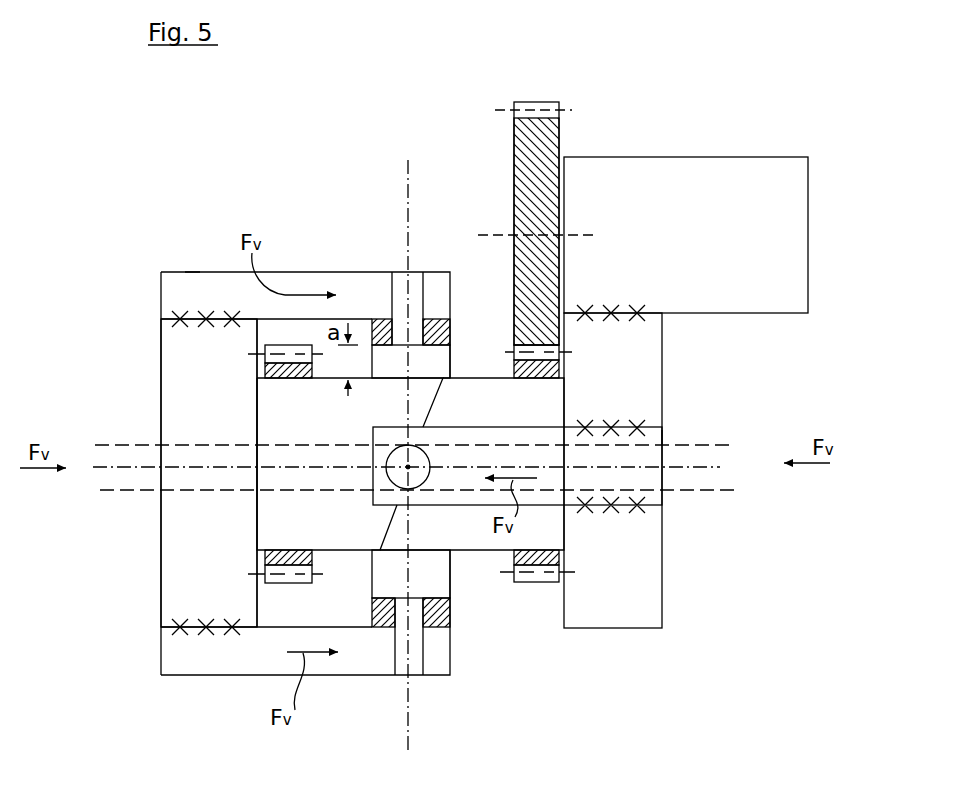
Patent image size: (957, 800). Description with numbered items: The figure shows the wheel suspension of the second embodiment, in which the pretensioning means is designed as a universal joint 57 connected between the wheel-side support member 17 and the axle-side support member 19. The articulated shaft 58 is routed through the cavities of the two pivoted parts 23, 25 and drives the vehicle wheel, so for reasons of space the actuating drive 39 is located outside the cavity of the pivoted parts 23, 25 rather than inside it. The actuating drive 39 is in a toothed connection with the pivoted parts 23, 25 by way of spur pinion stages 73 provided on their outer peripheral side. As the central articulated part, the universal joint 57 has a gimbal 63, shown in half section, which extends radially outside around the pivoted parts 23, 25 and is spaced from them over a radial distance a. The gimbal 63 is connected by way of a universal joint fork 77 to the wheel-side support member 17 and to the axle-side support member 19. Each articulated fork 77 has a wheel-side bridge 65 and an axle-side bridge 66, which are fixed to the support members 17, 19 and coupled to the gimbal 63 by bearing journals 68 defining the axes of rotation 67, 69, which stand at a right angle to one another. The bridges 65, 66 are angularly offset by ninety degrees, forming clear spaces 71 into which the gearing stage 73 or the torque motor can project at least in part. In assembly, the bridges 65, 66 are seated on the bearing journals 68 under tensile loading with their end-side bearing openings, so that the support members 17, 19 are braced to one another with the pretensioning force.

The wheel-side support member 17 is at (230, 406).
The axle-side support member 19 is at (622, 384).
The pivoted part 23 is at (323, 426).
The pivoted part 25 is at (525, 417).
The actuating drive 39 is at (720, 239).
The universal joint 57 is at (362, 249).
The articulated shaft 58 is at (724, 491).
The gimbal 63 is at (450, 580).
The wheel-side bridge 65 is at (161, 297).
The axle-side bridge 66 is at (664, 455).
The axis of rotation 67 is at (408, 242).
The bearing journal 68 is at (390, 293).
The axis of rotation 69 is at (408, 467).
The clear space 71 is at (464, 350).
The spur pinion stage 73 is at (505, 351).
The universal joint fork 77 is at (192, 269).